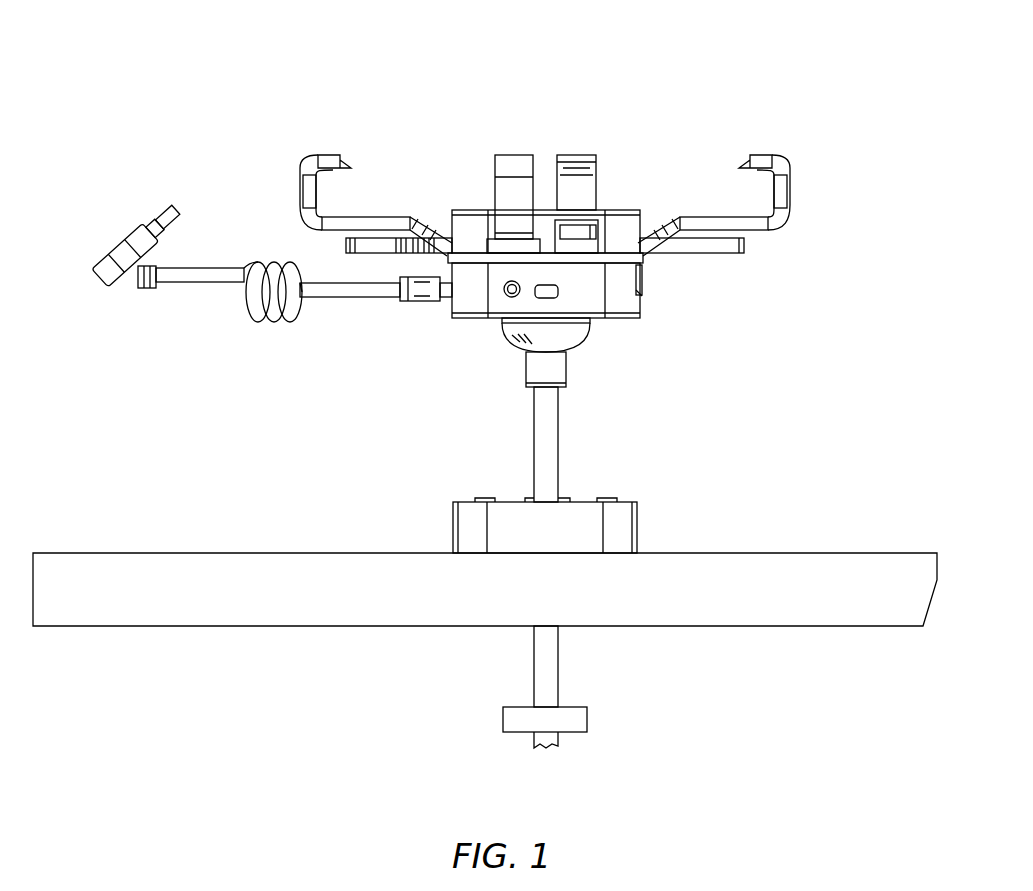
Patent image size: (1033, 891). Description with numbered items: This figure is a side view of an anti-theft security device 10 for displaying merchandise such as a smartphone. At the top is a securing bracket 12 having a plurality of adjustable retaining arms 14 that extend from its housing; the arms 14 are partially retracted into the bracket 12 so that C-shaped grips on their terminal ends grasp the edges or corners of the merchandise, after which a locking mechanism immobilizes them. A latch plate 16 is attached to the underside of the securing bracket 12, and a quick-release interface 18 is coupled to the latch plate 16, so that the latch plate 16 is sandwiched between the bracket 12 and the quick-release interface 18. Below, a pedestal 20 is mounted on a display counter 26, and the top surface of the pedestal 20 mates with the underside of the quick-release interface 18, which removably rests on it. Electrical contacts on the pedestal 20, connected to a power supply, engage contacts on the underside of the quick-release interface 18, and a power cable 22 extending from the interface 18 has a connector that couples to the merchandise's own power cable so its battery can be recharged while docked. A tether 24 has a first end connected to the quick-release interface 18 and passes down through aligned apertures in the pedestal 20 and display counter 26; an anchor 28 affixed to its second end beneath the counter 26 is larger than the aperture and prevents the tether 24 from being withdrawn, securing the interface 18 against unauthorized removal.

The security device 10 is at (288, 66).
The securing bracket 12 is at (640, 210).
The adjustable retaining arms 14 is at (345, 166).
The latch plate 16 is at (637, 258).
The quick-release interface 18 is at (641, 290).
The pedestal 20 is at (453, 532).
The power cable 22 is at (195, 280).
The tether 24 is at (558, 435).
The display counter 26 is at (818, 553).
The anchor 28 is at (587, 720).